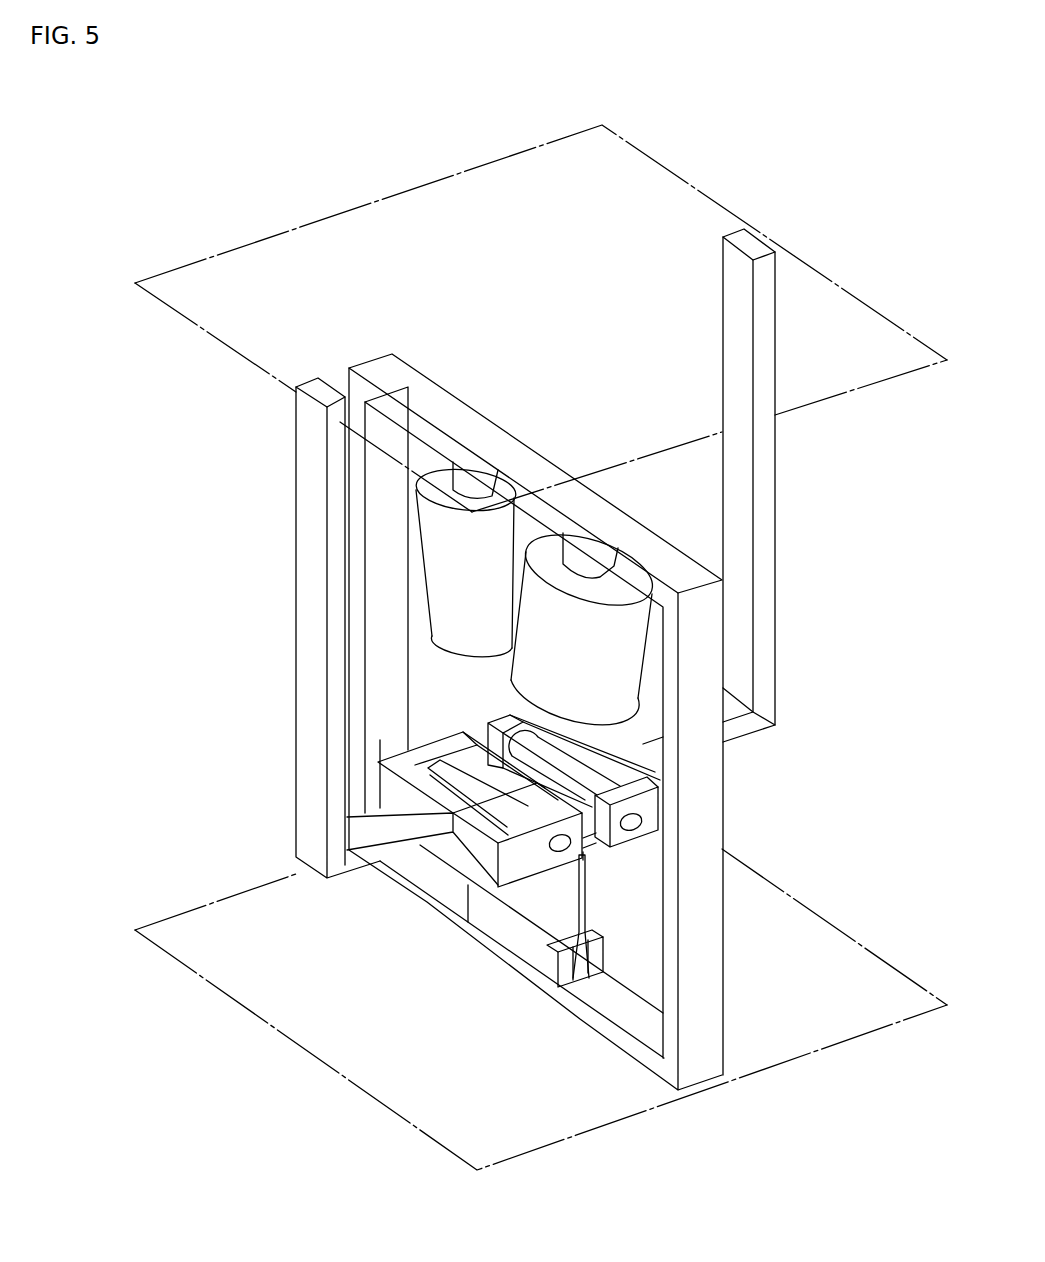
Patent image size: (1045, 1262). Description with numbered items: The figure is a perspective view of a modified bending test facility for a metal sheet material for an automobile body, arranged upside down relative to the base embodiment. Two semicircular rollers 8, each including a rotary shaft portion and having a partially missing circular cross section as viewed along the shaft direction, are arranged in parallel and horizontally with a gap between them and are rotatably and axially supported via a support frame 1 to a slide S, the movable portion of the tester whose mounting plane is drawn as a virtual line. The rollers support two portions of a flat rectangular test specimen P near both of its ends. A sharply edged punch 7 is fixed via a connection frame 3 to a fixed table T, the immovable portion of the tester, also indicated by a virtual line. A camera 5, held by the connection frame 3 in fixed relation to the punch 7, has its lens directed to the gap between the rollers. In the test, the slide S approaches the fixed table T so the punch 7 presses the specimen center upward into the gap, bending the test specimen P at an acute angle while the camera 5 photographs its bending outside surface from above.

The support frame 1 is at (776, 486).
The connection frame 3 is at (708, 804).
The camera 5 is at (480, 655).
The punch 7 is at (588, 908).
The semicircular roller 8 is at (438, 767).
The test specimen P is at (592, 852).
The slide S is at (877, 333).
The fixed table T is at (825, 937).